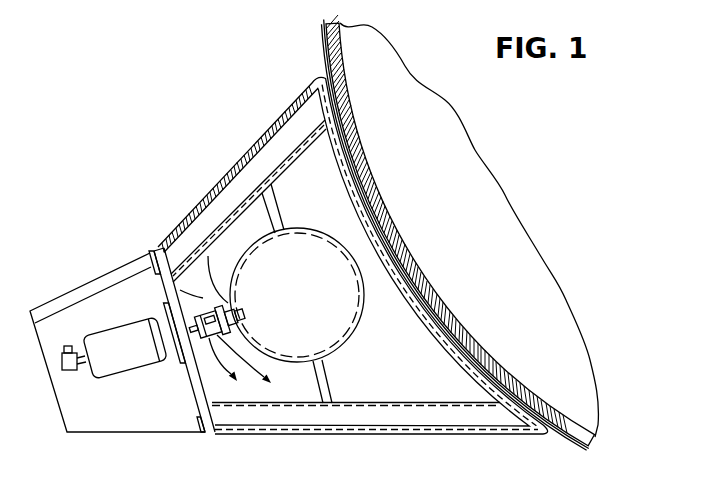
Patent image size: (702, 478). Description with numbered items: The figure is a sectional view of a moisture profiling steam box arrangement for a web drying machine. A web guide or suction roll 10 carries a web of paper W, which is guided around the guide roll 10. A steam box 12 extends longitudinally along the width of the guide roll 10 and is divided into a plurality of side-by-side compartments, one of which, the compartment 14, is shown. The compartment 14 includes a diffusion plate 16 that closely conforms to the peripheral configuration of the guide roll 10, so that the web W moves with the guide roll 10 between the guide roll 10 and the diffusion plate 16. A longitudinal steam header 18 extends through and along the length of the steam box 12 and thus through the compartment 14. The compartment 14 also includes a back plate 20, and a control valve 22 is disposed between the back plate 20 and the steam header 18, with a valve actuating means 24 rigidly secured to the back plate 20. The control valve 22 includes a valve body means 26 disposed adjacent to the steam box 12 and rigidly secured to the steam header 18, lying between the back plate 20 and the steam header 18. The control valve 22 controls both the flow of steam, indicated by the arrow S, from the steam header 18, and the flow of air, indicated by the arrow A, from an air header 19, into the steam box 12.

The web guide roll 10 is at (347, 82).
The steam box 12 is at (171, 219).
The compartment 14 is at (405, 381).
The diffusion plate 16 is at (368, 200).
The steam header 18 is at (347, 336).
The air header 19 is at (117, 433).
The back plate 20 is at (210, 390).
The control valve 22 is at (181, 380).
The valve actuating means 24 is at (119, 387).
The valve body means 26 is at (231, 338).
The web of paper W is at (325, 52).
The arrow indicating steam flow S is at (213, 300).
The arrow indicating air flow A is at (202, 274).